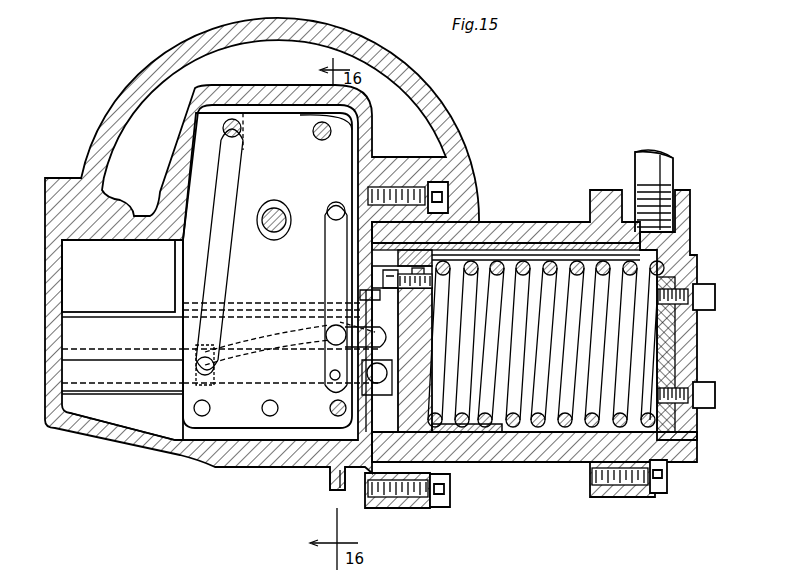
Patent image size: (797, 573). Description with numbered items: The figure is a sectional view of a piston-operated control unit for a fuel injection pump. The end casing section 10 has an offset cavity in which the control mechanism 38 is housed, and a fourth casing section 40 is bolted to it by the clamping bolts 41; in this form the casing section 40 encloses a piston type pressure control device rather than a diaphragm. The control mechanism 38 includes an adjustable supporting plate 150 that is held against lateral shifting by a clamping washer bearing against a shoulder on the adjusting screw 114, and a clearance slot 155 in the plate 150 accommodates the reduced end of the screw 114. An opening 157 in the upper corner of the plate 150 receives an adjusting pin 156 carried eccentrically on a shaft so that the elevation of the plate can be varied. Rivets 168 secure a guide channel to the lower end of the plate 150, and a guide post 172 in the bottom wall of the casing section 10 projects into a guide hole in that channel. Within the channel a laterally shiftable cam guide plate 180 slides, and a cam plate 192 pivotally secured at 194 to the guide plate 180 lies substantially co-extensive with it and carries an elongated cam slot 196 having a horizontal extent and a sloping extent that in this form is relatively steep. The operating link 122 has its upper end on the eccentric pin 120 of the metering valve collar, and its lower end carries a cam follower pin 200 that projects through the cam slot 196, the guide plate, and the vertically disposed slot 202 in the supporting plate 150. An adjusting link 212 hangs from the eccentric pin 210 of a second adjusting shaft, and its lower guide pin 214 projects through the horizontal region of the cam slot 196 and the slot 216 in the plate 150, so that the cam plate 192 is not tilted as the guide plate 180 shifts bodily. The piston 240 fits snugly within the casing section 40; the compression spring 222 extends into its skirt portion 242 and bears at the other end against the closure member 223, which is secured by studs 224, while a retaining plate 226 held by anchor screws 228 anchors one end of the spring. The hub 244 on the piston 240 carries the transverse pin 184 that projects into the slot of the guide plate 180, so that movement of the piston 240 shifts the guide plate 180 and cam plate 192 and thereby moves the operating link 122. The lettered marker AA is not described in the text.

The end casing section 10 is at (99, 126).
The adjustable supporting plate 150 is at (270, 118).
The adjusting pin 156 is at (350, 120).
The opening 157 is at (323, 141).
The eccentric pin 210 is at (242, 130).
The clearance slot 155 is at (275, 205).
The adjusting screw 114 is at (283, 232).
The eccentric pin 120 is at (334, 205).
The operating link 122 is at (327, 270).
The adjusting link 212 is at (220, 290).
The hub 244 is at (372, 322).
The cam guide plate 180 is at (100, 316).
The cam plate 192 is at (62, 333).
The cam slot 196 is at (70, 362).
The slot 216 is at (212, 346).
The guide pin 214 is at (196, 367).
The cam follower pin 200 is at (330, 338).
The transverse pin 184 is at (372, 349).
The slot 202 is at (332, 376).
The rivets 168 is at (262, 410).
The pivot 194 is at (378, 384).
The control mechanism 38 is at (160, 418).
The guide post 172 is at (322, 492).
The clamping bolts 41 is at (463, 500).
The fourth casing section 40 is at (558, 223).
The sleeve AA is at (512, 250).
The piston 240 is at (420, 430).
The skirt portion 242 is at (466, 432).
The compression spring 222 is at (566, 428).
The retaining plate 226 is at (668, 358).
The anchor screws 228 is at (709, 400).
The closure member 223 is at (694, 432).
The studs 224 is at (662, 475).